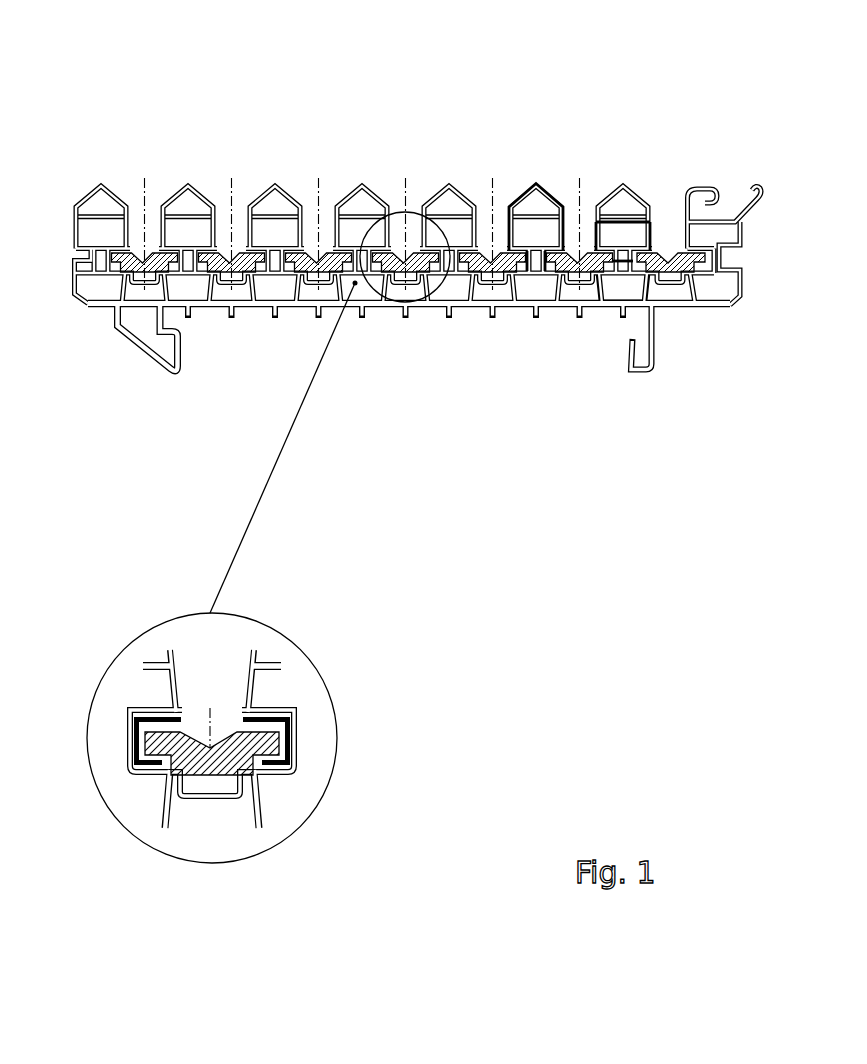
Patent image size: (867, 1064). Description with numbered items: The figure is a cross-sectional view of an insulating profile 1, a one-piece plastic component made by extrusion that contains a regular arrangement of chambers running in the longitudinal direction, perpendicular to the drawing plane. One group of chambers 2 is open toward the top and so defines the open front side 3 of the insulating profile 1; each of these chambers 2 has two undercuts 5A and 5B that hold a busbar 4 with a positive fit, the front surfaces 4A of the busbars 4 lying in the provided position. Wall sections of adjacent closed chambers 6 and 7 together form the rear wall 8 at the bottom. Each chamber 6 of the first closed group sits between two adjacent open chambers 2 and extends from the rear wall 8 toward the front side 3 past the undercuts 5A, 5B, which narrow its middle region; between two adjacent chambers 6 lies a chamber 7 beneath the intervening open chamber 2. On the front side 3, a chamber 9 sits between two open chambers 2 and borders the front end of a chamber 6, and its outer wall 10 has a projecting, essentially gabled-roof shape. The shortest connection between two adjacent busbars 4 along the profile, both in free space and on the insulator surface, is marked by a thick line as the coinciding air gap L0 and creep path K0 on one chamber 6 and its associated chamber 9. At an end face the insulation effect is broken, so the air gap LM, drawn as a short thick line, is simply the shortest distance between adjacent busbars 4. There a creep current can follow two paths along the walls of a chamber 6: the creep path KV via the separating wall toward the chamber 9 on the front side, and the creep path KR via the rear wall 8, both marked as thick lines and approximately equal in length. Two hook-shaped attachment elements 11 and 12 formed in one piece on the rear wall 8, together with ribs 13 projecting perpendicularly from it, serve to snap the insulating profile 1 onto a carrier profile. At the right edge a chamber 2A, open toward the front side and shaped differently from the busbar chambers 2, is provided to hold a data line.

The insulating profile 1 is at (418, 88).
The chambers of the open group 2 is at (228, 215).
The chamber for data line 2A is at (733, 192).
The open front side 3 is at (88, 177).
The busbar 4 is at (580, 265).
The front surface of busbar 4A is at (180, 728).
The undercut 5A is at (142, 716).
The undercut 5B is at (270, 718).
The chamber of the first closed group 6 is at (263, 282).
The chamber of another closed group 7 is at (490, 294).
The rear wall 8 is at (233, 300).
The chamber of another closed group 9 is at (540, 201).
The outer wall 10 is at (290, 198).
The hook-shaped attachment element 11 is at (158, 363).
The hook-shaped attachment element 12 is at (642, 372).
The ribs 13 is at (403, 318).
The air gap L0 is at (535, 205).
The creep path K0 is at (536, 228).
The creep path via front side KV is at (623, 222).
The creep path via rear side KR is at (612, 302).
The air gap at end face LM is at (652, 264).